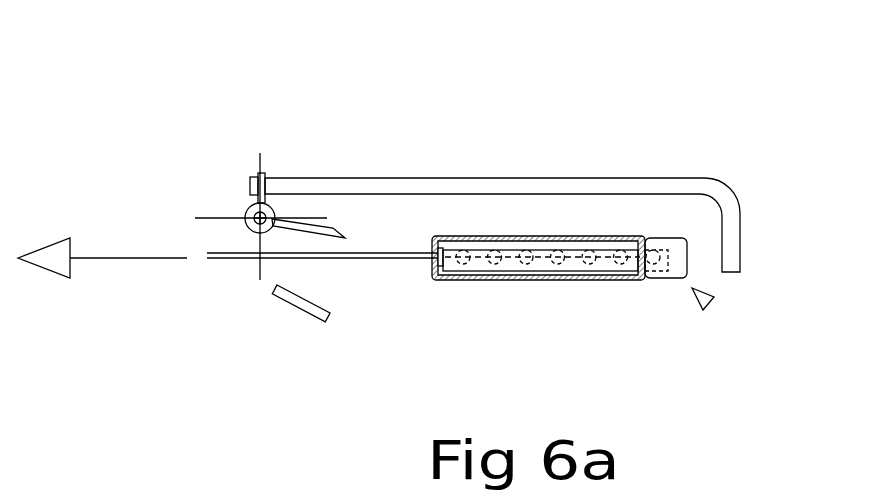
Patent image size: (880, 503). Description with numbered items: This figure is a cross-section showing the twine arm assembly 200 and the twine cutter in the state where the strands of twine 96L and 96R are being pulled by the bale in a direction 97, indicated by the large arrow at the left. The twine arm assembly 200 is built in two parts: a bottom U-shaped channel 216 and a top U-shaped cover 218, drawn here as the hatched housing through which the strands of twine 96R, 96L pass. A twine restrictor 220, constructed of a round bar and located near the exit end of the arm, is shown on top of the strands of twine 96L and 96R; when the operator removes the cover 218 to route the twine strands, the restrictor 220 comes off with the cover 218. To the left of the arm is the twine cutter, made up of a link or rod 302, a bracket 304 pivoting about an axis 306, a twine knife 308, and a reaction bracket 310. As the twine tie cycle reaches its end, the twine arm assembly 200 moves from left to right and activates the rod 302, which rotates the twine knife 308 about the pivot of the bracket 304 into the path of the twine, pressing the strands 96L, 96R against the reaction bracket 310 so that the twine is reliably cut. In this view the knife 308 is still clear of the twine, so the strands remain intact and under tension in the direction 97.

The direction 97 is at (47, 243).
The twine arm assembly 200 is at (700, 302).
The bottom U-shaped channel 216 is at (567, 250).
The top U-shaped cover 218 is at (562, 240).
The twine restrictor 220 is at (610, 250).
The rod 302 is at (623, 178).
The bracket 304 is at (245, 213).
The axis 306 is at (250, 228).
The twine knife 308 is at (333, 226).
The reaction bracket 310 is at (298, 310).
The right-side twine strand 96R is at (491, 257).
The left-side twine strand 96L is at (590, 280).